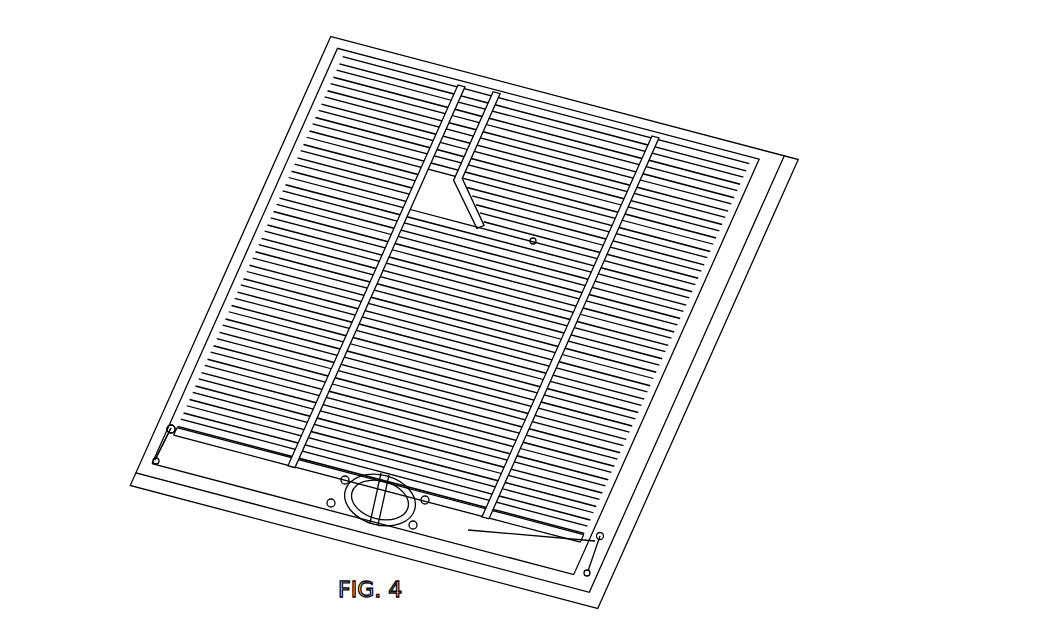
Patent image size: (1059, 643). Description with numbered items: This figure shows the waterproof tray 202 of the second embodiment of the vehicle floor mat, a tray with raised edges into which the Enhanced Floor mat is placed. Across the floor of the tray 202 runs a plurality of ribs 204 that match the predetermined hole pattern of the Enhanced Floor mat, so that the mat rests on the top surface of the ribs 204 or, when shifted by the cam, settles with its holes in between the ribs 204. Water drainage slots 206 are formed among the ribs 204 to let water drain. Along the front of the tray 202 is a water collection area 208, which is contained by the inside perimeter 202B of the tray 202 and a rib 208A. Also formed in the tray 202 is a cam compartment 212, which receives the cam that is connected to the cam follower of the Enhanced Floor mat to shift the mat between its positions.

The waterproof tray 202 is at (150, 103).
The inside perimeter 202B is at (207, 468).
The ribs 204 is at (320, 102).
The water drainage slots 206 is at (490, 83).
The water collection area 208 is at (223, 455).
The rib 208A is at (163, 420).
The cam compartment 212 is at (342, 507).